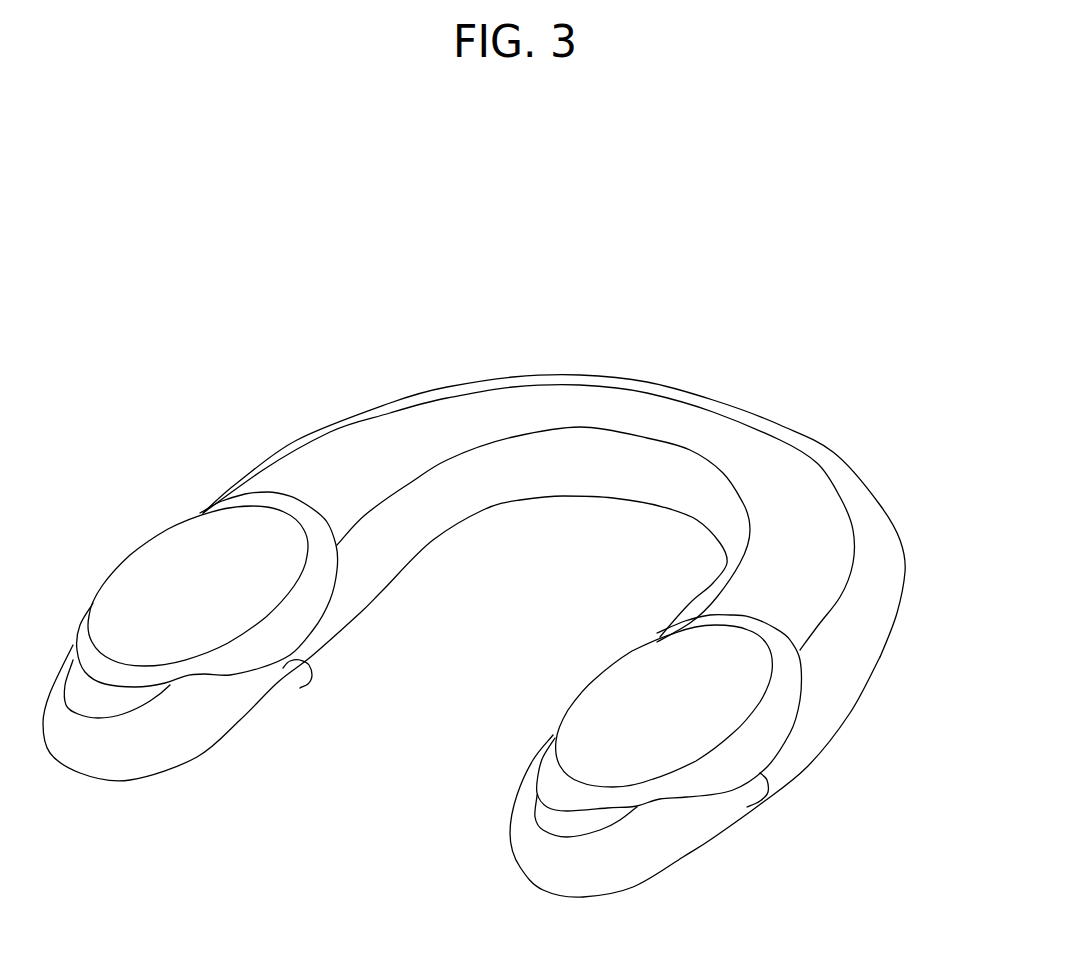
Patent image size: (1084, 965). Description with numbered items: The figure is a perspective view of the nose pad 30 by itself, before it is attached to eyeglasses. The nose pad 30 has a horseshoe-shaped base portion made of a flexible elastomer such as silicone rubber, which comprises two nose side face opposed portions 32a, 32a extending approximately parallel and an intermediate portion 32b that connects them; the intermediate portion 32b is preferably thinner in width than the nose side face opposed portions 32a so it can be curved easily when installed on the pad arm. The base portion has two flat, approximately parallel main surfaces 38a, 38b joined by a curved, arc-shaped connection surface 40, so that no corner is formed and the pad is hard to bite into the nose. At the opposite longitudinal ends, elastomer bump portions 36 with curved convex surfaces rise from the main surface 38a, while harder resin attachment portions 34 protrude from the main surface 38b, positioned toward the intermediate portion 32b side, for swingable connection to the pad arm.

The nose pad 30 is at (602, 233).
The nose side face opposed portion 32a is at (385, 588).
The intermediate portion 32b is at (650, 507).
The attachment portion 34 is at (300, 690).
The bump portion 36 is at (160, 558).
The main surface 38a is at (785, 477).
The main surface 38b is at (827, 727).
The connection surface 40 is at (883, 652).